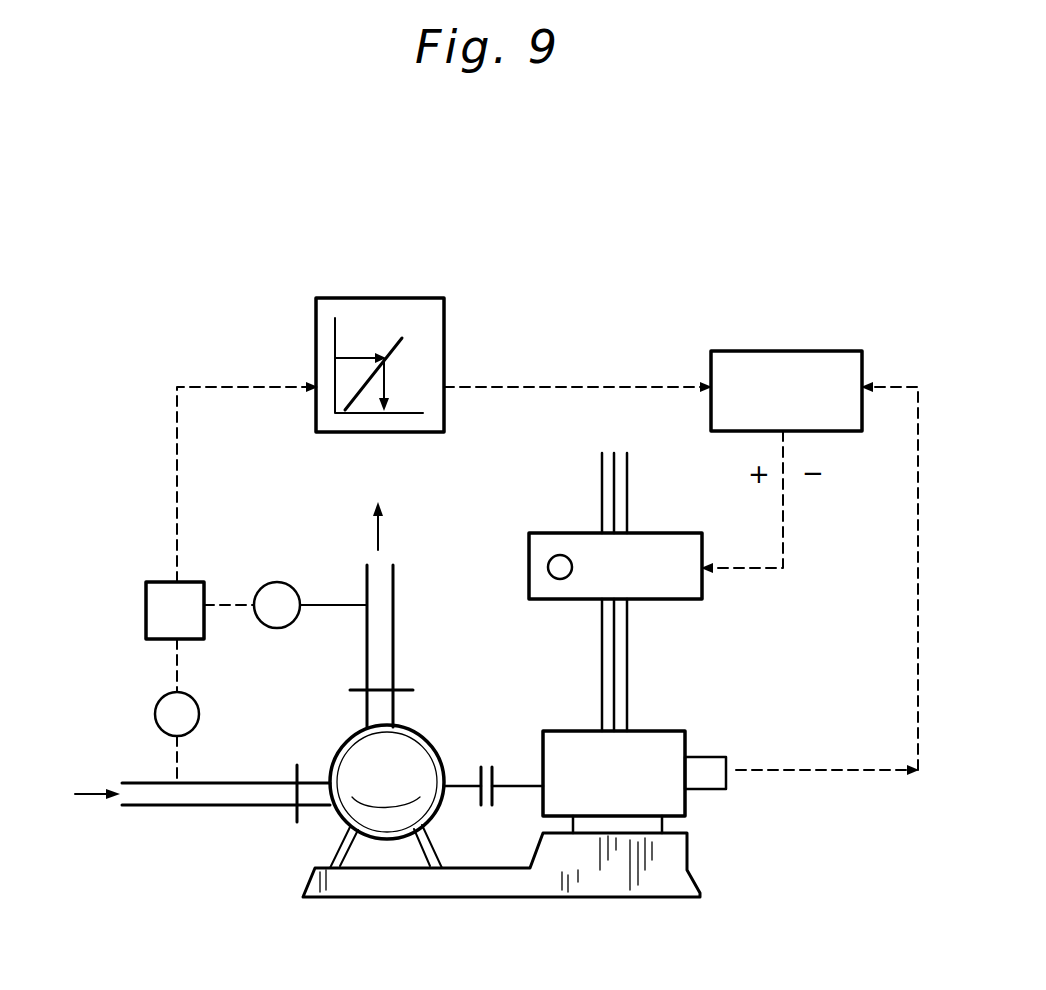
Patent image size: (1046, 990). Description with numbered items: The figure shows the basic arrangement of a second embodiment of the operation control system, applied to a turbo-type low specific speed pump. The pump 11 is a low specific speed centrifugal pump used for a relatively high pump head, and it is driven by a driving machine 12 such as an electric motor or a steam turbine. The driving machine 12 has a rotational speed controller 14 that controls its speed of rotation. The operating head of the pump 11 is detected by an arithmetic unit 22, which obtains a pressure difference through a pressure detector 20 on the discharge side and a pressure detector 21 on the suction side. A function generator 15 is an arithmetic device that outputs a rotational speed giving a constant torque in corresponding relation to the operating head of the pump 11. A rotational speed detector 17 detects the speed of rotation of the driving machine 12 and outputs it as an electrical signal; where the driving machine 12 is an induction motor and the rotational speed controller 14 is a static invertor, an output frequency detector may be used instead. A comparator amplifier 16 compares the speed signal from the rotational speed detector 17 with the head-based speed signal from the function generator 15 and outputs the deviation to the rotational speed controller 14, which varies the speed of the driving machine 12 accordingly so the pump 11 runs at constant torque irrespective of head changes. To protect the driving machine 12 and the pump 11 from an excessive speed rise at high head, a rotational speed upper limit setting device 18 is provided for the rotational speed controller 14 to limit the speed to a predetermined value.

The pump 11 is at (333, 813).
The driving machine 12 is at (546, 795).
The rotational speed controller 14 is at (664, 540).
The function generator 15 is at (440, 349).
The comparator amplifier 16 is at (790, 351).
The rotational speed detector 17 is at (704, 757).
The rotational speed upper limit setting device 18 is at (560, 554).
The pressure detector 20 is at (280, 582).
The pressure detector 21 is at (155, 714).
The arithmetic unit 22 is at (146, 600).